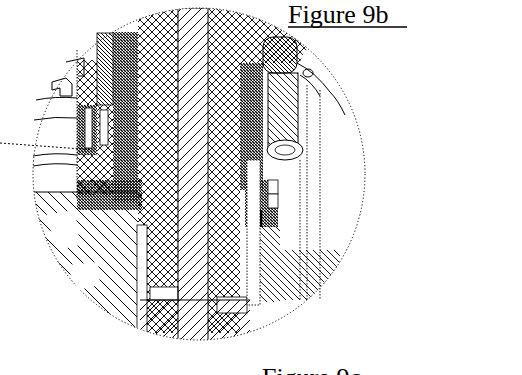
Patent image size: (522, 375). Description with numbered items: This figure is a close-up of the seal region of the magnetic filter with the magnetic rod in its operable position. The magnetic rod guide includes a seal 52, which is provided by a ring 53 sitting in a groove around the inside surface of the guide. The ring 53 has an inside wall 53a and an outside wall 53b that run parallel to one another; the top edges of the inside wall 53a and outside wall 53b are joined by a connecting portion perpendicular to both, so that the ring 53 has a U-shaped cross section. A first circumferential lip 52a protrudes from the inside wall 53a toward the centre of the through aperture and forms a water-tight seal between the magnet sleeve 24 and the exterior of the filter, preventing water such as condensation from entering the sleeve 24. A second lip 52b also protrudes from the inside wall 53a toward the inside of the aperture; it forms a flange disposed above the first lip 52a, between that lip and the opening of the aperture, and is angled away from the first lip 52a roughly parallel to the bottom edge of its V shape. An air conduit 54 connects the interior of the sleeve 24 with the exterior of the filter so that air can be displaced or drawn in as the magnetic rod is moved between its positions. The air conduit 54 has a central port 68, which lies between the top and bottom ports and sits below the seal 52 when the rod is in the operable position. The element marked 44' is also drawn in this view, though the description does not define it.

The air conduit 54 is at (205, 143).
The second lip 52b is at (278, 184).
The seal 52 is at (277, 194).
The first circumferential lip 52a is at (275, 206).
The ring 53 is at (262, 215).
The shaft 44' is at (322, 175).
The magnet sleeve 24 is at (253, 277).
The central port 68 is at (247, 313).
The outside wall 53b is at (109, 198).
The inside wall 53a is at (121, 197).